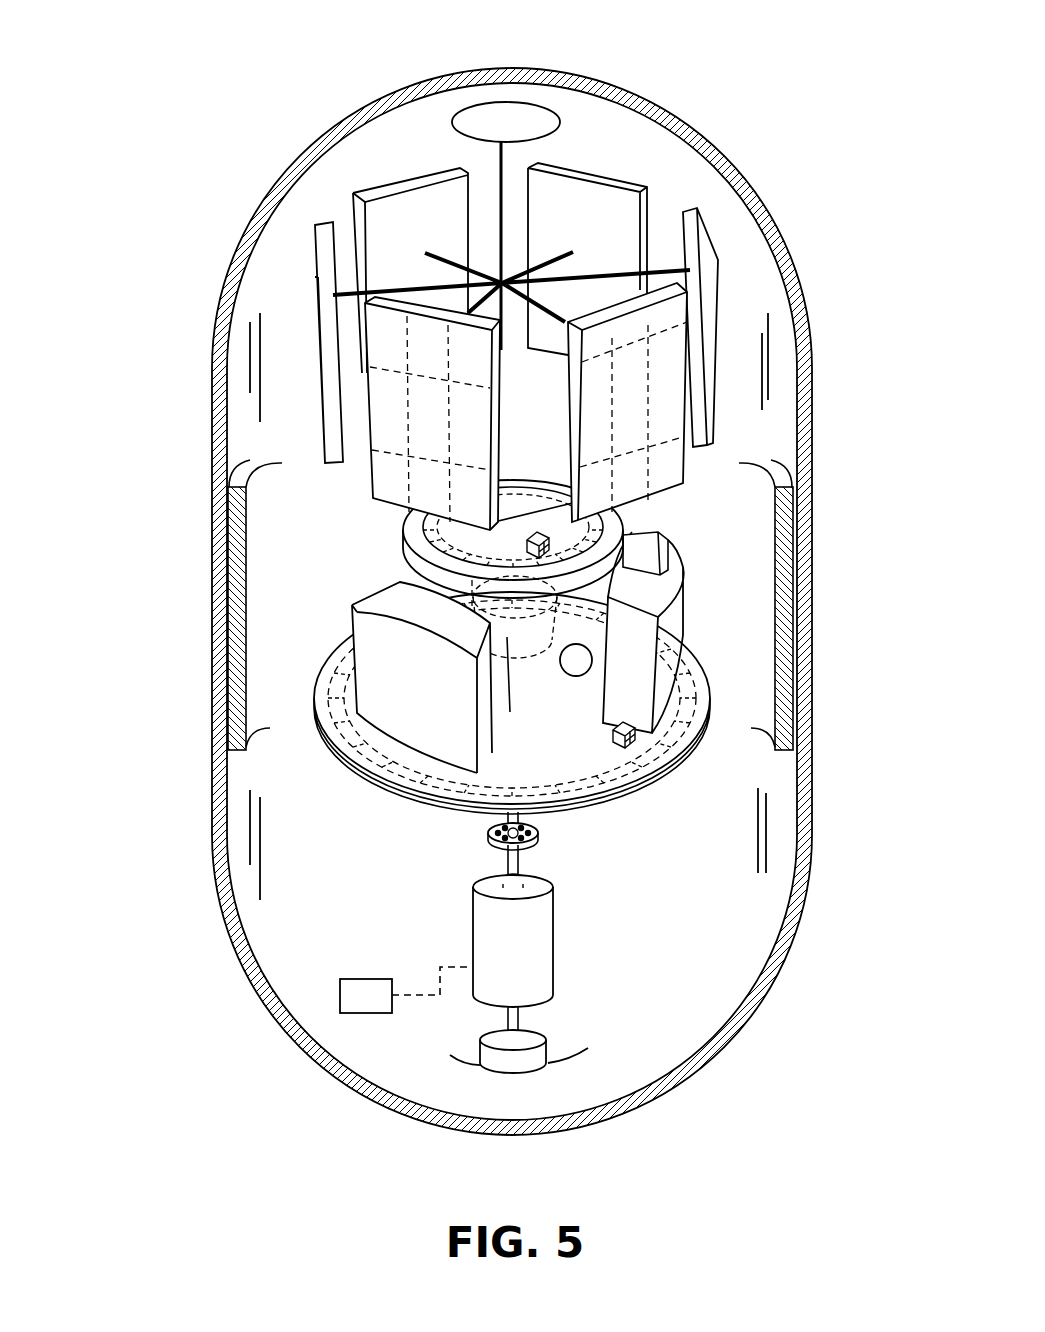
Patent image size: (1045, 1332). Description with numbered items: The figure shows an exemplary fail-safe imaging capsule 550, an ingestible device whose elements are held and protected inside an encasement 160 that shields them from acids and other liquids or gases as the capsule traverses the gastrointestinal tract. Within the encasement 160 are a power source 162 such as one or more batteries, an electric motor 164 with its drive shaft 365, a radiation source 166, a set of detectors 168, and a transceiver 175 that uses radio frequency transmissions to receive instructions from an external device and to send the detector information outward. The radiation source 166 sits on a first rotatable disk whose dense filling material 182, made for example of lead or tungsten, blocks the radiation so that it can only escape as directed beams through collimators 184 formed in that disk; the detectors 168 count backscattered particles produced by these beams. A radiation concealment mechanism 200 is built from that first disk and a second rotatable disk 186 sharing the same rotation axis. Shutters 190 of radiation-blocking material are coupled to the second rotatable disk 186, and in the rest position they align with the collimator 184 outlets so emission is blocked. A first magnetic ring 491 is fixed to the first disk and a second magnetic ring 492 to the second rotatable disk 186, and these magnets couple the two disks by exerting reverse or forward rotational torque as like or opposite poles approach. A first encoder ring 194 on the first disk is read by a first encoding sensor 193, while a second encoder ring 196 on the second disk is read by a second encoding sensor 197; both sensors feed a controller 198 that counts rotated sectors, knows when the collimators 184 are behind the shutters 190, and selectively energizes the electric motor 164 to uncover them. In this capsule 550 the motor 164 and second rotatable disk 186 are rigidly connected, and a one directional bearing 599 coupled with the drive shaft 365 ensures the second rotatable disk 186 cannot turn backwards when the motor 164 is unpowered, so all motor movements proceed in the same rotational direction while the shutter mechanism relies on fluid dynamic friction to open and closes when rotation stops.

The imaging capsule 550 is at (155, 182).
The encasement 160 is at (731, 152).
The transceiver 175 is at (530, 117).
The detectors 168 is at (388, 405).
The first magnetic ring 491 is at (457, 537).
The first encoder ring 194 is at (417, 558).
The first encoding sensor 193 is at (600, 515).
The radiation concealment mechanism 200 is at (307, 637).
The shutters 190 is at (405, 688).
The second rotatable disk 186 is at (353, 760).
The second encoder ring 196 is at (386, 766).
The radiation source 166 is at (478, 722).
The one directional bearing 599 is at (478, 838).
The second magnetic ring 492 is at (572, 781).
The filling material 182 is at (553, 690).
The collimators 184 is at (577, 677).
The second encoding sensor 197 is at (640, 742).
The drive shaft 365 is at (523, 860).
The electric motor 164 is at (553, 948).
The power source 162 is at (565, 1042).
The controller 198 is at (340, 992).